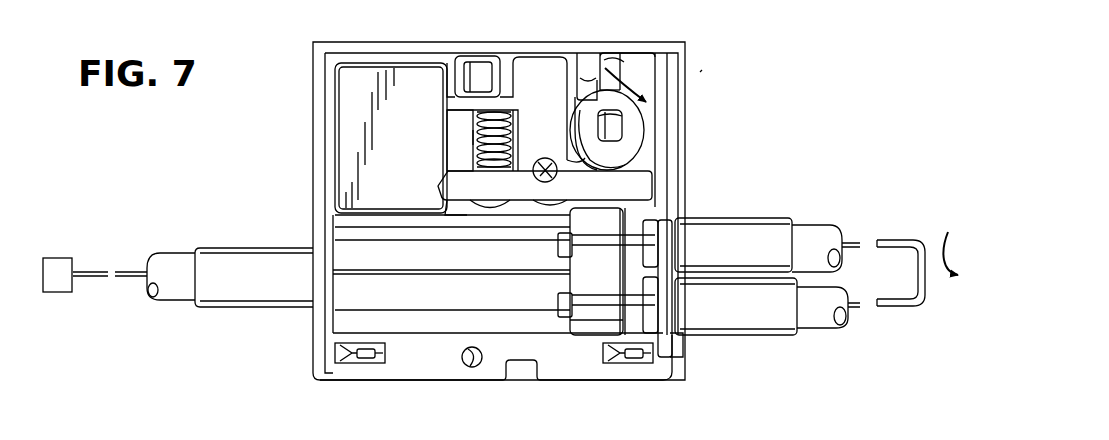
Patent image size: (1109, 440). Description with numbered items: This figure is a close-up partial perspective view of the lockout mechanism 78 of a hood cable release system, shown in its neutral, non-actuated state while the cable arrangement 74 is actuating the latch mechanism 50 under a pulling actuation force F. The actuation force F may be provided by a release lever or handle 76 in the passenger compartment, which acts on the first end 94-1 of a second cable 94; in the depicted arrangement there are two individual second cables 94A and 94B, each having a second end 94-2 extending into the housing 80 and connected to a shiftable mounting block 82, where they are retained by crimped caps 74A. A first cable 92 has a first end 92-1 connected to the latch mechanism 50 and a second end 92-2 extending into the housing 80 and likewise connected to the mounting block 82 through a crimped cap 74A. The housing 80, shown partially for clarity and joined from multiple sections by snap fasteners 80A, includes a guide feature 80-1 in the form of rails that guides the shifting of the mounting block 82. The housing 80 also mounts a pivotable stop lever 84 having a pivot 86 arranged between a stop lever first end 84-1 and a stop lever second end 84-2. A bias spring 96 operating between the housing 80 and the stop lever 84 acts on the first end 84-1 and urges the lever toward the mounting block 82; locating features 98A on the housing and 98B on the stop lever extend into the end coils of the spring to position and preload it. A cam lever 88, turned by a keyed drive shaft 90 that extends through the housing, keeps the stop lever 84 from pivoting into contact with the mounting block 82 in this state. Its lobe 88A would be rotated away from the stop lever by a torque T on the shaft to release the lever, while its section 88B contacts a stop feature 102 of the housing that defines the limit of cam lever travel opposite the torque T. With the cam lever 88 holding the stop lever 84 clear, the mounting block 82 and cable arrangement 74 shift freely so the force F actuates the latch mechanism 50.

The latch mechanism 50 is at (55, 293).
The cable arrangement 74 is at (230, 246).
The crimped cap 74A is at (562, 249).
The release lever or handle 76 is at (906, 308).
The lockout mechanism 78 is at (706, 67).
The housing 80 is at (313, 136).
The snap fasteners 80A is at (358, 357).
The guide feature 80-1 is at (350, 220).
The mounting block 82 is at (574, 220).
The stop lever 84 is at (452, 175).
The stop lever first end 84-1 is at (633, 184).
The stop lever second end 84-2 is at (440, 178).
The pivot 86 is at (545, 157).
The cam lever 88 is at (632, 133).
The lobe 88A is at (604, 155).
The section 88B is at (610, 66).
The keyed drive shaft 90 is at (620, 125).
The first cable 92 is at (183, 309).
The first end 92-1 is at (92, 264).
The second end 92-2 is at (338, 278).
The second cable 94 is at (836, 218).
The first end 94-1 is at (882, 307).
The second end 94-2 is at (746, 245).
The second cable 94A is at (632, 272).
The second cable 94B is at (577, 302).
The bias spring 96 is at (472, 137).
The locating feature 98A is at (498, 110).
The locating feature 98B is at (493, 165).
The stop feature 102 is at (586, 80).
The torque T is at (606, 68).
The actuation force F is at (949, 242).